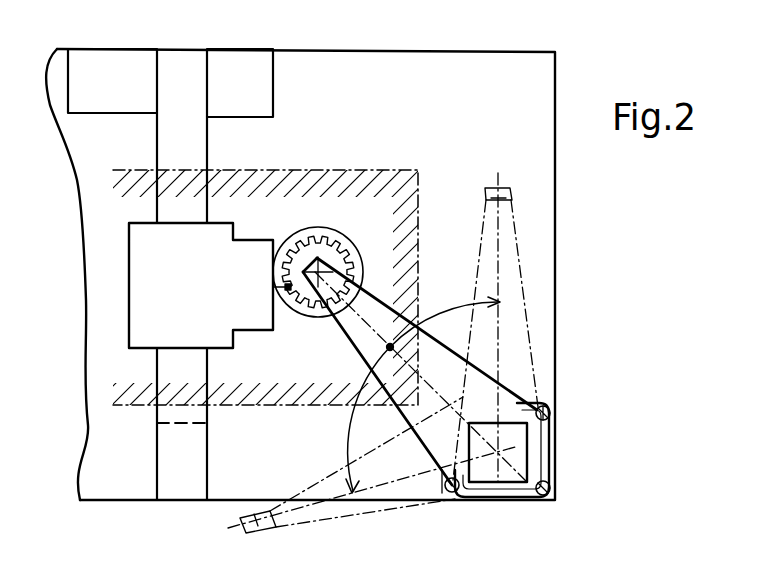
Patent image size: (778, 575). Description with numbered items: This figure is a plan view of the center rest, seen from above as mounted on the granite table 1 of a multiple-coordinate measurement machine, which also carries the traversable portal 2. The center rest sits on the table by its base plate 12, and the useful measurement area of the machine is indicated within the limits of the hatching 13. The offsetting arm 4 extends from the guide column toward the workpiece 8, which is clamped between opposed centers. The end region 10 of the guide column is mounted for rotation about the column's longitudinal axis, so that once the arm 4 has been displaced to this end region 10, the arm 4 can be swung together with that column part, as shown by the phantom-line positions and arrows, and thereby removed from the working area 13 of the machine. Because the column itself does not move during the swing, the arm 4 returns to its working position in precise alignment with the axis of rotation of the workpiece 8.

The granite table 1 is at (547, 278).
The traversable portal 2 is at (132, 100).
The offsetting arm 4 is at (357, 327).
The workpiece 8 is at (333, 250).
The end region of guide 10 is at (488, 470).
The base plate 12 is at (547, 442).
The hatching 13 is at (285, 168).